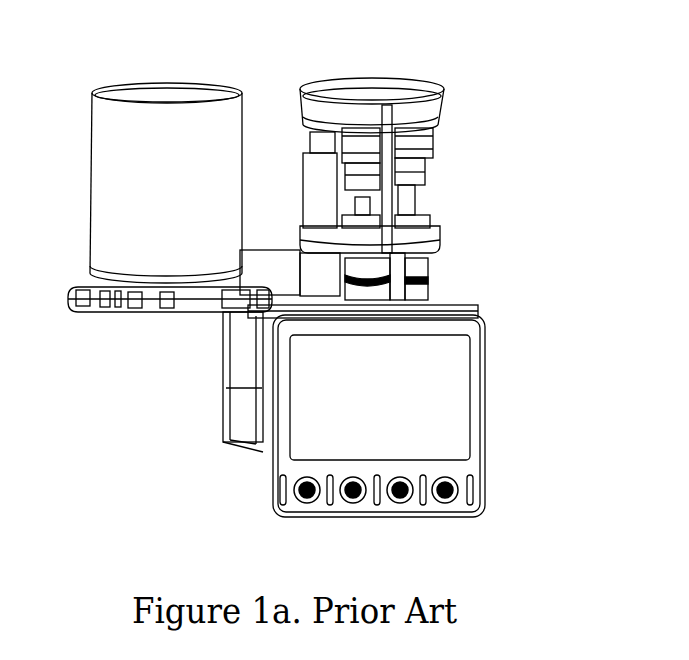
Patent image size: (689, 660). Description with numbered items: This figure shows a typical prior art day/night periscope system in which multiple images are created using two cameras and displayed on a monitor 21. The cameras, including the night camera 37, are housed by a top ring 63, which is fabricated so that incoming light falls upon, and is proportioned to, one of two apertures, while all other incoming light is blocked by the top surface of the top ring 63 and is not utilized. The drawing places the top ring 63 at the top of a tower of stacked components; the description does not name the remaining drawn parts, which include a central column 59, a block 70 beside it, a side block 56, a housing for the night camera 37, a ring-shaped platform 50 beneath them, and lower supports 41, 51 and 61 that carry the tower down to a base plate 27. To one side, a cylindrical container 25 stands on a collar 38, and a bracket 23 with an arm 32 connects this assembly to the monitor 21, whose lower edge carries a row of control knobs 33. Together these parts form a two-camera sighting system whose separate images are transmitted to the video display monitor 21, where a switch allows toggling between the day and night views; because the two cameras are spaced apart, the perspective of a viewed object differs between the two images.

The monitor 21 is at (486, 367).
The mounting bracket 23 is at (223, 342).
The container 25 is at (95, 112).
The base plate 27 is at (470, 306).
The bracket arm 32 is at (232, 388).
The control knobs 33 is at (286, 512).
The night camera 37 is at (440, 145).
The collar 38 is at (70, 290).
The lower support 41 is at (427, 281).
The ring platform 50 is at (445, 234).
The lower housing 51 is at (355, 277).
The side block 56 is at (428, 190).
The central column 59 is at (404, 128).
The left block 61 is at (298, 262).
The top ring 63 is at (436, 106).
The motor block 70 is at (304, 176).